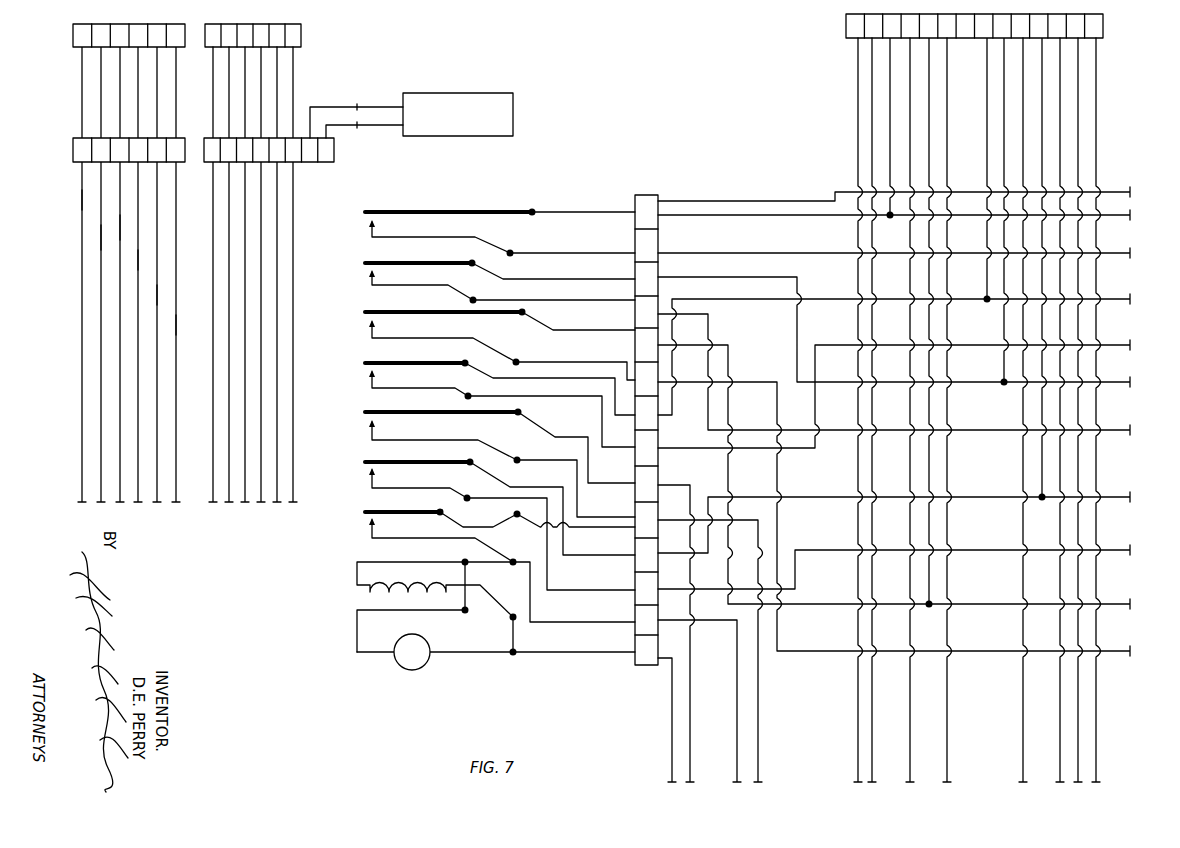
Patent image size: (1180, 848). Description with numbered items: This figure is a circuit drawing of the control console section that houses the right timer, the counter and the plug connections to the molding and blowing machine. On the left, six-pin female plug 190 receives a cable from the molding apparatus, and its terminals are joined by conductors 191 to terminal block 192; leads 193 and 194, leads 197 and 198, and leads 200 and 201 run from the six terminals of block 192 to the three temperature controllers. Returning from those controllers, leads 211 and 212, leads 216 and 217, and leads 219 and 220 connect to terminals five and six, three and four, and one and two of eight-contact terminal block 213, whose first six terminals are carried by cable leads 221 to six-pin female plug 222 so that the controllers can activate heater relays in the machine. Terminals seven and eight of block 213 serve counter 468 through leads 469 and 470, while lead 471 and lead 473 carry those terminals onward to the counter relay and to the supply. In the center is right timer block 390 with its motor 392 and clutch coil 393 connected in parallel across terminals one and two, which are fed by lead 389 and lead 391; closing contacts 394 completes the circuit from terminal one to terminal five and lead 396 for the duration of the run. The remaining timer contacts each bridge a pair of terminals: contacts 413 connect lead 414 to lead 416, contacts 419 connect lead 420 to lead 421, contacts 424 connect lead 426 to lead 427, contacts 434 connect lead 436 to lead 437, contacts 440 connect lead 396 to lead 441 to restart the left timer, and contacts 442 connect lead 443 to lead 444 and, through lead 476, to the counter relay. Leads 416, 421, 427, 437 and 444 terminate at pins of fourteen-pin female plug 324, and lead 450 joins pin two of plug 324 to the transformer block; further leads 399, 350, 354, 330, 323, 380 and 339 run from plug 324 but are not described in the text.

The six-pin female plug 190 is at (82, 52).
The conductors 191 is at (118, 75).
The terminal block 192 is at (82, 166).
The lead 193 is at (177, 324).
The lead 194 is at (158, 295).
The lead 197 is at (138, 258).
The lead 198 is at (118, 230).
The lead 200 is at (118, 230).
The lead 201 is at (82, 200).
The lead 211 is at (274, 503).
The lead 212 is at (291, 503).
The eight-contact terminal block 213 is at (337, 153).
The lead 216 is at (245, 393).
The lead 217 is at (261, 410).
The lead 219 is at (212, 355).
The lead 220 is at (229, 390).
The leads 221 is at (242, 70).
The six-pin female plug 222 is at (294, 50).
The conductor 323 is at (1060, 100).
The fourteen-pin female plug 324 is at (1103, 18).
The conductor 330 is at (1023, 140).
The conductor 339 is at (1096, 60).
The conductor 350 is at (947, 118).
The conductor 354 is at (910, 92).
The conductor 380 is at (1078, 85).
The lead 389 is at (737, 726).
The right timer terminal block 390 is at (648, 665).
The lead 391 is at (672, 718).
The motor 392 is at (400, 664).
The clutch coil 393 is at (370, 592).
The contacts 394 is at (428, 513).
The lead 396 is at (758, 736).
The conductor 399 is at (858, 52).
The contacts 413 is at (441, 463).
The lead 414 is at (832, 550).
The lead 416 is at (827, 497).
The contacts 419 is at (443, 364).
The lead 420 is at (1122, 345).
The lead 421 is at (785, 303).
The contacts 424 is at (430, 312).
The lead 426 is at (840, 652).
The lead 427 is at (845, 605).
The contacts 434 is at (428, 263).
The lead 436 is at (1008, 432).
The lead 437 is at (797, 333).
The contacts 440 is at (450, 412).
The lead 441 is at (690, 660).
The contacts 442 is at (410, 212).
The lead 443 is at (810, 253).
The lead 444 is at (745, 216).
The lead 450 is at (872, 68).
The counter 468 is at (513, 100).
The lead 469 is at (358, 107).
The lead 470 is at (358, 125).
The lead 471 is at (310, 193).
The lead 473 is at (326, 168).
The lead 476 is at (735, 201).